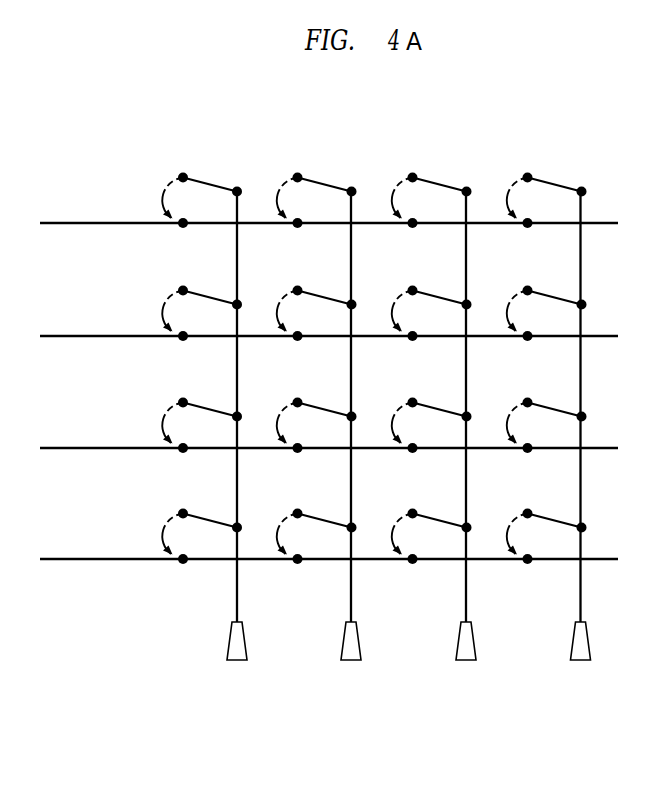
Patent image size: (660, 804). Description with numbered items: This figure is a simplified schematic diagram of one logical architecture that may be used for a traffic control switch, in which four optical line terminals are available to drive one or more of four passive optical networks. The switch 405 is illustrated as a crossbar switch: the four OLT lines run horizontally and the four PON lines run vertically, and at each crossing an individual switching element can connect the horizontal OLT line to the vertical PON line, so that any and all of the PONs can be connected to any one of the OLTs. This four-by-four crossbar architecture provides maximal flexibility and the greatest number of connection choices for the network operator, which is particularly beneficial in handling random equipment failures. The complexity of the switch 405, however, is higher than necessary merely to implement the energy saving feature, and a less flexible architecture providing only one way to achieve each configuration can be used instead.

The switch 405 is at (116, 637).